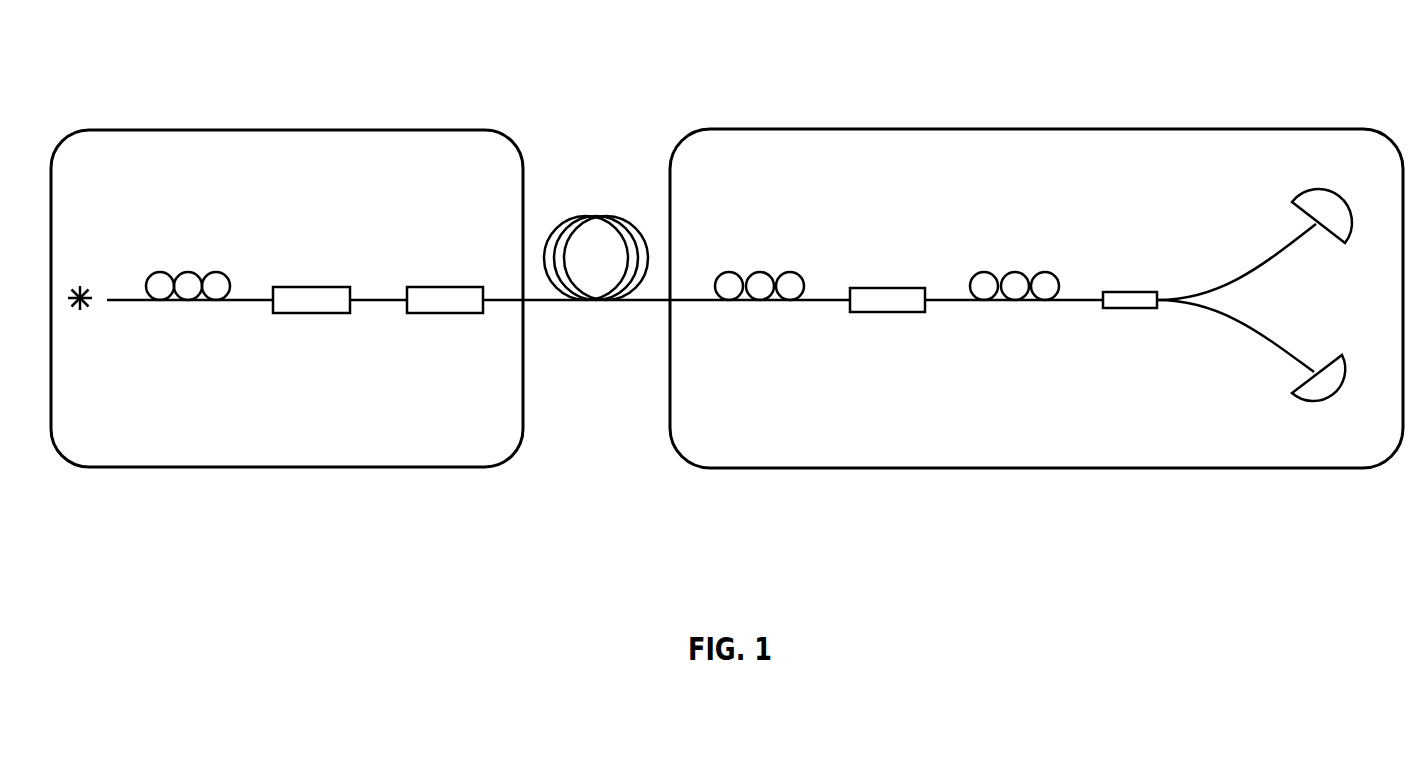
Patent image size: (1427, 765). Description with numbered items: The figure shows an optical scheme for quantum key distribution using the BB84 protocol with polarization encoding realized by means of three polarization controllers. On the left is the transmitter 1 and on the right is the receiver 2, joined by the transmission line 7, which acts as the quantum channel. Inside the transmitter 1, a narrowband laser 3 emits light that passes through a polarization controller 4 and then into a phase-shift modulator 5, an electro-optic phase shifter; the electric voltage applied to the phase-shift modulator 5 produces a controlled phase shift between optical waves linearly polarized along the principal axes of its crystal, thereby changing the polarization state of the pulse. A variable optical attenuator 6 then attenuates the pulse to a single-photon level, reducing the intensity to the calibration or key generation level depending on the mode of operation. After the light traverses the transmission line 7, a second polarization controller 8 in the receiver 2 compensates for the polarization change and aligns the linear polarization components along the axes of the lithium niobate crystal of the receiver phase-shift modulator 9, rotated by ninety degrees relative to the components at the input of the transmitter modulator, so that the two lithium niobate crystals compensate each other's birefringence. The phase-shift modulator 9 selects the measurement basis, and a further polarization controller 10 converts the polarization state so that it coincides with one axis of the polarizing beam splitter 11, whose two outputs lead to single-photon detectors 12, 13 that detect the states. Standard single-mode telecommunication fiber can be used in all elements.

The transmitter 1 is at (287, 259).
The receiver 2 is at (1036, 252).
The narrowband laser 3 is at (145, 334).
The polarization controller 4 is at (205, 242).
The phase-shift modulator 5 is at (325, 338).
The variable optical attenuator 6 is at (448, 242).
The transmission line 7 is at (606, 185).
The polarization controller 8 is at (770, 233).
The phase-shift modulator 9 is at (891, 332).
The polarization controller 10 is at (1011, 239).
The polarizing beam splitter 11 is at (1180, 303).
The single-photon detector 12 is at (1337, 154).
The single-photon detector 13 is at (1310, 446).